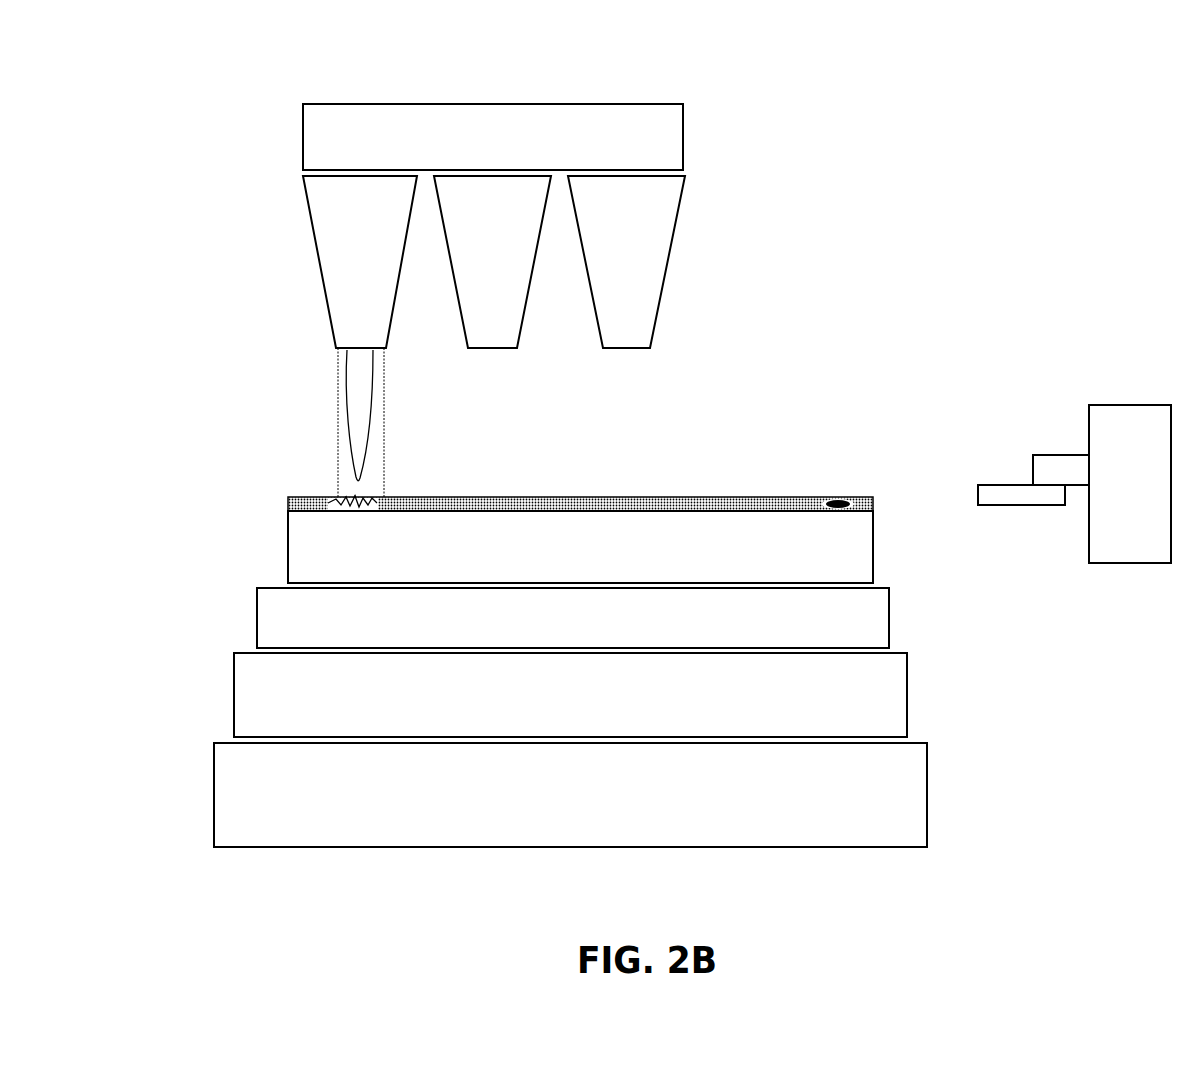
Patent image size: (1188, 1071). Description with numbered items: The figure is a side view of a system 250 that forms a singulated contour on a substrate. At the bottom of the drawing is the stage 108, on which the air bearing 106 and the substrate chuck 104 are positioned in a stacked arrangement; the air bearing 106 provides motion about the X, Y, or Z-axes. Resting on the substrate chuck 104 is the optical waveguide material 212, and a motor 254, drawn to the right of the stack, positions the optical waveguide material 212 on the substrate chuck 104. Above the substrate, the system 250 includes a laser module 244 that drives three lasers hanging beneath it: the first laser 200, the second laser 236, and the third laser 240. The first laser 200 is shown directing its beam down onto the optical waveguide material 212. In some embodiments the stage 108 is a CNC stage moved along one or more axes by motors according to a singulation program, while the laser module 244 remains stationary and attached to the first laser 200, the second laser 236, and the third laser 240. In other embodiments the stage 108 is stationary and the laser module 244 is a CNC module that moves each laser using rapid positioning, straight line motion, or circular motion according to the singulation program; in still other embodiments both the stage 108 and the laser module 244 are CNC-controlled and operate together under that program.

The system 250 is at (218, 106).
The laser module 244 is at (475, 147).
The first laser 200 is at (346, 247).
The second laser 236 is at (480, 247).
The third laser 240 is at (614, 247).
The optical waveguide material 212 is at (557, 556).
The substrate chuck 104 is at (555, 631).
The air bearing 106 is at (554, 707).
The stage 108 is at (554, 806).
The motor 254 is at (1112, 496).